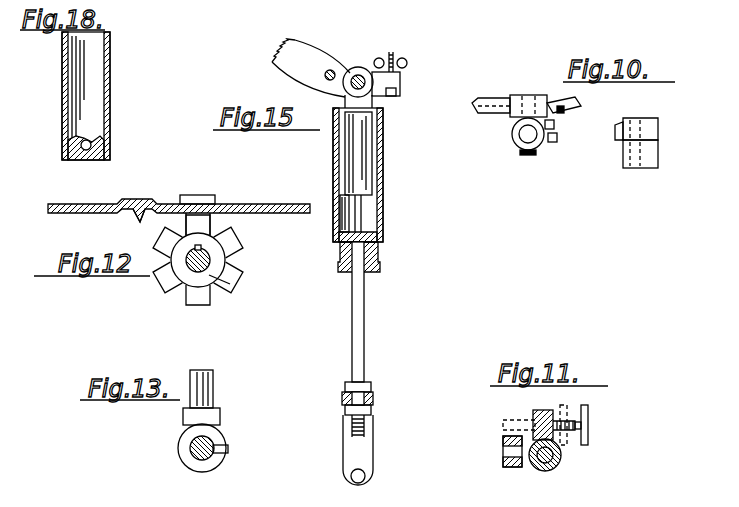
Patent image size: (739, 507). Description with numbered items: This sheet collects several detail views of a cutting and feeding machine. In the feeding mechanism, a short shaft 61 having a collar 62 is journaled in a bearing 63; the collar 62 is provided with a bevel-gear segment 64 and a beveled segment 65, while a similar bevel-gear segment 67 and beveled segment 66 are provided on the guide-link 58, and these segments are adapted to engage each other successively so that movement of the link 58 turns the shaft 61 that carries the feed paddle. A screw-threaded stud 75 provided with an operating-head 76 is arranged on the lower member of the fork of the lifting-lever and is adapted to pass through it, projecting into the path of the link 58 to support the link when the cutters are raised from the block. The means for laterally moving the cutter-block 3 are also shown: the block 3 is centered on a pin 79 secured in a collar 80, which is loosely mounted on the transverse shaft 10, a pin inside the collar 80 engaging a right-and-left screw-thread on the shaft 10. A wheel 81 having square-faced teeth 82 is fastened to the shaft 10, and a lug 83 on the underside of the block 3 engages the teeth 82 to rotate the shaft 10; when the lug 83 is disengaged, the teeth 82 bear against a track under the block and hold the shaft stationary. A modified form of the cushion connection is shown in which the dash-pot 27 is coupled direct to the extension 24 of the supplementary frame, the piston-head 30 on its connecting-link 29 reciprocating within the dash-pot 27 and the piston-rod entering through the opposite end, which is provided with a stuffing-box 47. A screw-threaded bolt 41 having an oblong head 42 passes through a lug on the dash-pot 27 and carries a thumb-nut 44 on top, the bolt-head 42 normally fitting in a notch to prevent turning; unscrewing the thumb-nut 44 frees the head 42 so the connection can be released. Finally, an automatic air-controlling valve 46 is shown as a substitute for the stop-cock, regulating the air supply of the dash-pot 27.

In FIG. 18, the automatic air-controlling valve 46 is at (70, 158).
In FIG. 12, the cutter-block 3 is at (60, 210).
In FIG. 12, the lug 83 is at (135, 218).
In FIG. 12, the pin 79 is at (200, 197).
In FIG. 13, the pin 79 is at (212, 377).
In FIG. 12, the wheel 81 is at (218, 262).
In FIG. 12, the square-faced teeth 82 is at (228, 279).
In FIG. 12, the transverse shaft 10 is at (190, 270).
In FIG. 13, the transverse shaft 10 is at (192, 445).
In FIG. 13, the collar 80 is at (215, 437).
In FIG. 15, the extensions 24 is at (290, 55).
In FIG. 15, the screw-threaded bolt 41 is at (395, 53).
In FIG. 15, the thumb-nut 44 is at (408, 63).
In FIG. 15, the oblong head 42 is at (392, 96).
In FIG. 15, the dash-pot 27 is at (384, 138).
In FIG. 15, the piston-head 30 is at (370, 178).
In FIG. 15, the stuffing-box 47 is at (378, 258).
In FIG. 15, the connecting-link 29 is at (373, 397).
In FIG. 10, the beveled segment 66 is at (490, 107).
In FIG. 10, the collar 62 is at (520, 143).
In FIG. 10, the bevel-gear segment 67 is at (576, 103).
In FIG. 10, the bevel-gear segment 64 is at (550, 143).
In FIG. 10, the beveled segment 65 is at (659, 131).
In FIG. 11, the screw-threaded stud 75 is at (533, 421).
In FIG. 11, the link 58 is at (503, 440).
In FIG. 11, the operating-head 76 is at (588, 424).
In FIG. 11, the short shaft 61 is at (561, 458).
In FIG. 11, the bearing 63 is at (541, 470).